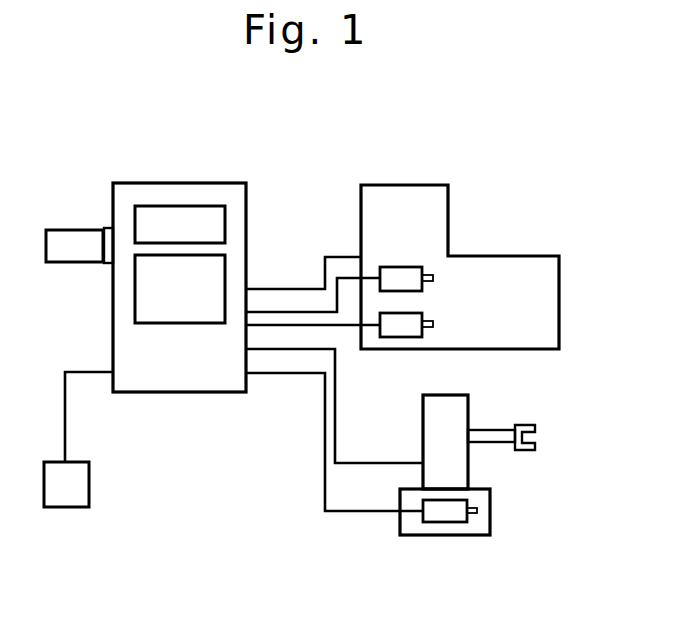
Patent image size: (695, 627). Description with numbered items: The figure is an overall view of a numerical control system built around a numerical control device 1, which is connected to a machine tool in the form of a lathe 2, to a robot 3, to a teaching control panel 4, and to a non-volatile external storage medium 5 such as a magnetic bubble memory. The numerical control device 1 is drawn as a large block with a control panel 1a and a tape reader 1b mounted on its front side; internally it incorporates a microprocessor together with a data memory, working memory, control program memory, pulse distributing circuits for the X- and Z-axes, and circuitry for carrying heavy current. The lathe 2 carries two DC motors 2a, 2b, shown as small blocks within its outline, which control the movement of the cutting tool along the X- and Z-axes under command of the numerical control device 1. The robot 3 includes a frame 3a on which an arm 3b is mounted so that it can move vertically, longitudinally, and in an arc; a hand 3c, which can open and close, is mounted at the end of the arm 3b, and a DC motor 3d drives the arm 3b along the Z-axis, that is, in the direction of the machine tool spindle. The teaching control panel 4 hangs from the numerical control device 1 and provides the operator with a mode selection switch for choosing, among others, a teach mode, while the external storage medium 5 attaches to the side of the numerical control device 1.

The numerical control device 1 is at (218, 182).
The control panel 1a is at (218, 228).
The tape reader 1b is at (215, 282).
The lathe 2 is at (447, 200).
The DC motor 2a is at (415, 267).
The DC motor 2b is at (423, 313).
The robot 3 is at (473, 397).
The frame 3a is at (430, 425).
The arm 3b is at (498, 428).
The hand 3c is at (535, 430).
The DC motor 3d is at (453, 515).
The teaching control panel 4 is at (86, 485).
The non-volatile external storage medium 5 is at (63, 230).